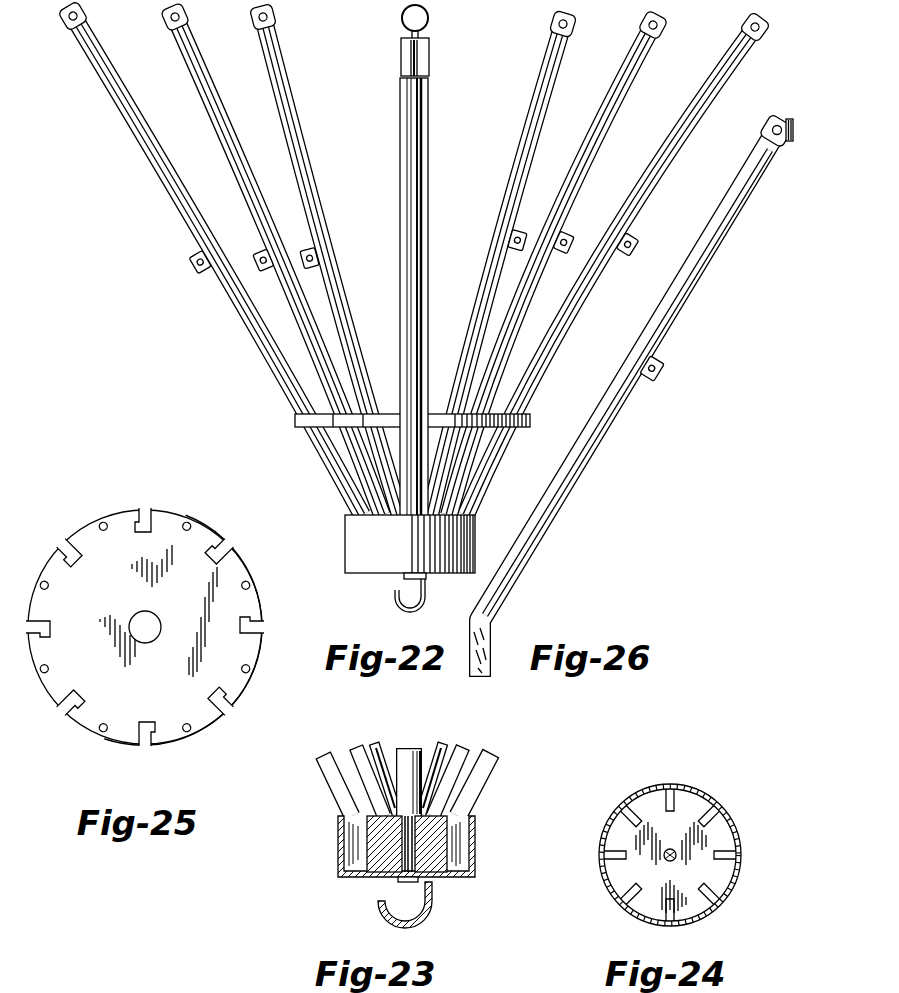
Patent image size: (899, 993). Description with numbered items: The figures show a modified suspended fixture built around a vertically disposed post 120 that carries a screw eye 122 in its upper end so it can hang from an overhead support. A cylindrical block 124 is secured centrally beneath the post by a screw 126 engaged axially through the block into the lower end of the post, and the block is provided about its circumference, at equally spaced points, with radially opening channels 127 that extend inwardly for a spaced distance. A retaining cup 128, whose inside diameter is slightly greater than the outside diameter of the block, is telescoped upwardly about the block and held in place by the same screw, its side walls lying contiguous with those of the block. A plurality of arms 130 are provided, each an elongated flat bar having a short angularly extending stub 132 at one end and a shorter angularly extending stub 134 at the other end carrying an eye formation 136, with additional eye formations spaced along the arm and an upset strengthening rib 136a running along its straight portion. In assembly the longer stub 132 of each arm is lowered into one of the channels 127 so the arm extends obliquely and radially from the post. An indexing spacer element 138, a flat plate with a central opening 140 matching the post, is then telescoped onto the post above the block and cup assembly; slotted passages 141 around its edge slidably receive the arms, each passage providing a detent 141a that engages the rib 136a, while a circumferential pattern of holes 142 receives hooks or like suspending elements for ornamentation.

In FIG. 22, the post 120 is at (428, 205).
In FIG. 22, the screw eye 122 is at (431, 19).
In FIG. 23, the cylindrical block 124 is at (387, 855).
In FIG. 24, the cylindrical block 124 is at (673, 859).
In FIG. 22, the screw 126 is at (398, 586).
In FIG. 23, the screw 126 is at (420, 858).
In FIG. 24, the radially opening channels 127 is at (703, 786).
In FIG. 22, the retaining cup 128 is at (360, 540).
In FIG. 23, the retaining cup 128 is at (338, 835).
In FIG. 24, the retaining cup 128 is at (670, 835).
In FIG. 22, the arms 130 is at (288, 118).
In FIG. 26, the arms 130 is at (636, 379).
In FIG. 26, the angularly extending stub 132 is at (487, 642).
In FIG. 26, the shorter angularly extending stub 134 is at (769, 125).
In FIG. 26, the eye formations 136 is at (778, 142).
In FIG. 26, the upset strengthening rib 136a is at (540, 525).
In FIG. 22, the indexing spacer element 138 is at (530, 421).
In FIG. 25, the indexing spacer element 138 is at (230, 535).
In FIG. 25, the central opening 140 is at (150, 648).
In FIG. 25, the slotted passages 141 is at (148, 619).
In FIG. 25, the detent 141a is at (172, 748).
In FIG. 25, the holes 142 is at (145, 601).